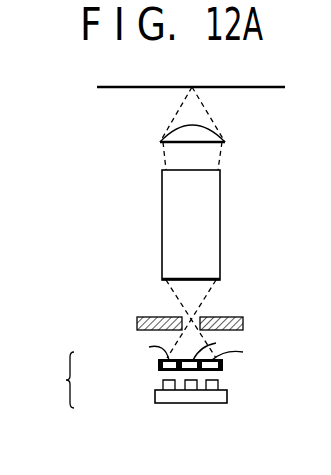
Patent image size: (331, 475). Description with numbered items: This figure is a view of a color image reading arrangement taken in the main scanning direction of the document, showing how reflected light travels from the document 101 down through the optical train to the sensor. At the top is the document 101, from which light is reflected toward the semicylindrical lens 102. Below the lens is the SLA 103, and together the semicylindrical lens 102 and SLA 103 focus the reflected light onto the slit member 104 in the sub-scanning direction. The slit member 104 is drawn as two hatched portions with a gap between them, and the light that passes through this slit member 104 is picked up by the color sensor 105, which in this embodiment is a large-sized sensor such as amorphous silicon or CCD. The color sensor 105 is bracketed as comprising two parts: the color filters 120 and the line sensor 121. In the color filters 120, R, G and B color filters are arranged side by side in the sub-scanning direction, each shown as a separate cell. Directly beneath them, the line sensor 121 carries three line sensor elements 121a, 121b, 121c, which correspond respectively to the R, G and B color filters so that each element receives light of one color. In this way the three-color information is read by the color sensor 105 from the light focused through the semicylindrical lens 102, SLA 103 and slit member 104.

The document 101 is at (97, 87).
The semicylindrical lens 102 is at (160, 142).
The SLA 103 is at (162, 225).
The slit member 104 is at (137, 323).
The color sensor 105 is at (156, 394).
The color filters 120 is at (158, 365).
The line sensor 121 is at (187, 414).
The line sensor element 121a is at (167, 392).
The line sensor element 121b is at (190, 392).
The line sensor element 121c is at (220, 384).